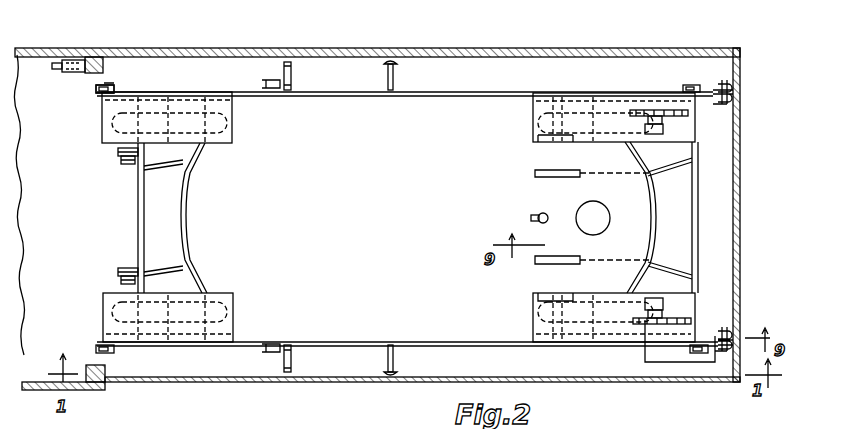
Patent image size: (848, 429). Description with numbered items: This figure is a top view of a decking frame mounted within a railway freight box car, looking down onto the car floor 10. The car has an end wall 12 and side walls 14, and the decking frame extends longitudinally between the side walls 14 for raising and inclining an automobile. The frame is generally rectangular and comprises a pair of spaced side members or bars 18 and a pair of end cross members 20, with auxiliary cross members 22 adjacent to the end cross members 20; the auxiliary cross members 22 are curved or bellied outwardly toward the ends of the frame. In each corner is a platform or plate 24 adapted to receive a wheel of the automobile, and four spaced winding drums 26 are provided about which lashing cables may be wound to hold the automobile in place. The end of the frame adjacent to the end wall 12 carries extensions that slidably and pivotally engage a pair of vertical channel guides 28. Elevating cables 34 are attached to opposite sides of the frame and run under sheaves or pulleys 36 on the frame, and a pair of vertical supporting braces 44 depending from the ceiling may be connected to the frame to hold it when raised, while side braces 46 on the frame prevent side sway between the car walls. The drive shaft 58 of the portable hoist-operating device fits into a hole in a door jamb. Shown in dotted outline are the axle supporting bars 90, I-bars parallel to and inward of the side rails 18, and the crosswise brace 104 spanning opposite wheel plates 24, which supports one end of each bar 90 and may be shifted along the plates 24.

The floor 10 is at (183, 205).
The end wall 12 is at (738, 195).
The side walls 14 is at (565, 57).
The side members 18 is at (450, 96).
The end cross members 20 is at (139, 210).
The auxiliary cross members 22 is at (183, 216).
The platforms 24 is at (540, 113).
The winding drums 26 is at (118, 288).
The vertical channel guides 28 is at (738, 112).
The cables 34 is at (96, 88).
The sheaves 36 is at (114, 88).
The vertical supporting braces 44 is at (291, 83).
The side braces 46 is at (394, 82).
The drive shaft 58 is at (75, 62).
The longitudinal members 90 is at (600, 188).
The brace 104 is at (552, 198).